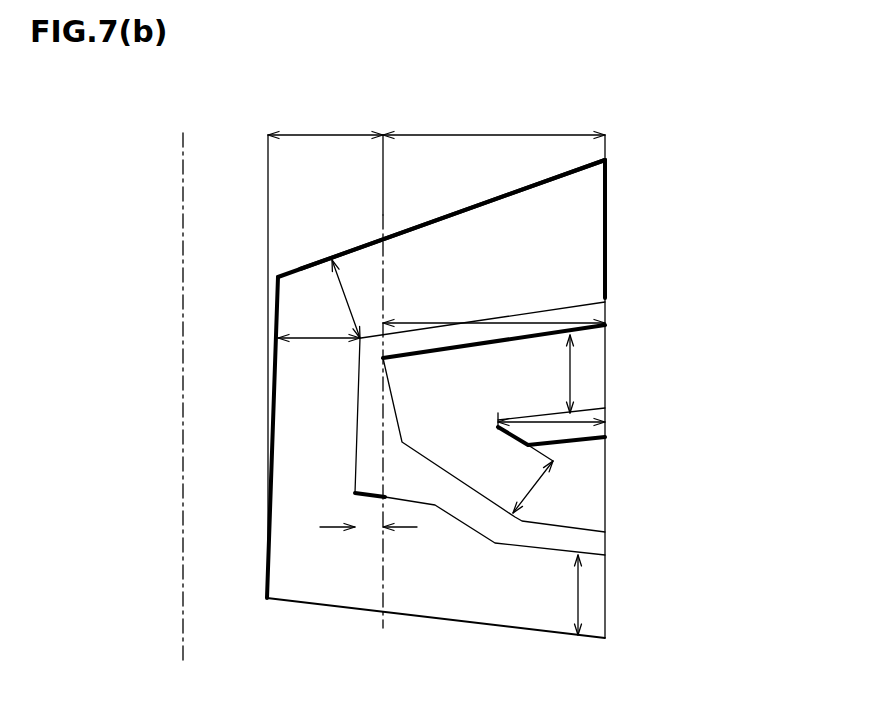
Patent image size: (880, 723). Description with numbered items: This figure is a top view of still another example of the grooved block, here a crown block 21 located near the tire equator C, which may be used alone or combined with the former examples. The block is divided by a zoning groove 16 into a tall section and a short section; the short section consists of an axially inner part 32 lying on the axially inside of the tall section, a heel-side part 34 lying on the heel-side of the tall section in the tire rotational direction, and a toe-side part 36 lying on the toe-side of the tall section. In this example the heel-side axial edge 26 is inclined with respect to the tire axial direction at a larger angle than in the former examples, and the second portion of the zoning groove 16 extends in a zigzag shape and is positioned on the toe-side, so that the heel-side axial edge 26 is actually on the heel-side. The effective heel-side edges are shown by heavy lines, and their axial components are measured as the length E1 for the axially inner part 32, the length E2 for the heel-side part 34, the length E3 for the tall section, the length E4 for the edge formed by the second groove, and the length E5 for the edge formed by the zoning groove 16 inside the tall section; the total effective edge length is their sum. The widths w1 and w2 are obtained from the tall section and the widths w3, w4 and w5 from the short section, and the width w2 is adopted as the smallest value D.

The crown block 21 is at (642, 172).
The heel-side axial edge 26 is at (453, 211).
The heel-side part 34 is at (560, 230).
The axially inner part 32 is at (302, 570).
The toe-side part 36 is at (542, 610).
The zoning groove 16 is at (480, 507).
The tire equator C is at (182, 384).
The length of axial component of heel-side block edge of axially inner part E1 is at (325, 368).
The length of axial component of heel-side block edge of heel-side part E2 is at (494, 134).
The length of axial component of heel-side block edge of tall section E3 is at (542, 320).
The length of axial component of heel-side block edge formed by second groove E4 is at (567, 420).
The length of axial component of heel-side block edge formed by zoning groove E5 is at (372, 530).
The width of tall section portion w1 is at (567, 370).
The width of tall section portion w2 is at (532, 488).
The width of short section portion w3 is at (348, 295).
The width of short section portion w4 is at (322, 340).
The width of short section portion w5 is at (577, 593).